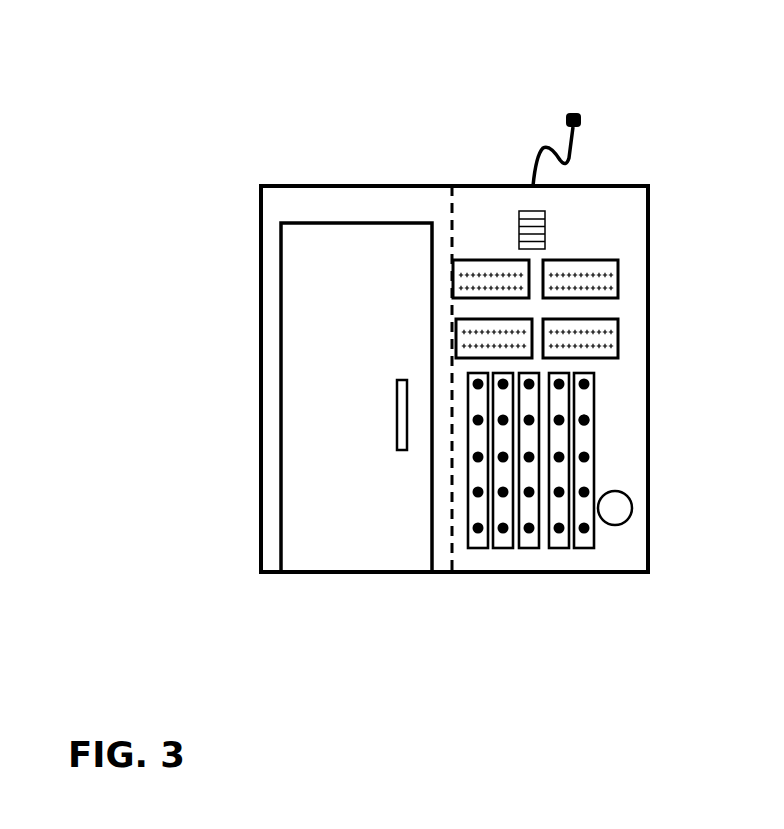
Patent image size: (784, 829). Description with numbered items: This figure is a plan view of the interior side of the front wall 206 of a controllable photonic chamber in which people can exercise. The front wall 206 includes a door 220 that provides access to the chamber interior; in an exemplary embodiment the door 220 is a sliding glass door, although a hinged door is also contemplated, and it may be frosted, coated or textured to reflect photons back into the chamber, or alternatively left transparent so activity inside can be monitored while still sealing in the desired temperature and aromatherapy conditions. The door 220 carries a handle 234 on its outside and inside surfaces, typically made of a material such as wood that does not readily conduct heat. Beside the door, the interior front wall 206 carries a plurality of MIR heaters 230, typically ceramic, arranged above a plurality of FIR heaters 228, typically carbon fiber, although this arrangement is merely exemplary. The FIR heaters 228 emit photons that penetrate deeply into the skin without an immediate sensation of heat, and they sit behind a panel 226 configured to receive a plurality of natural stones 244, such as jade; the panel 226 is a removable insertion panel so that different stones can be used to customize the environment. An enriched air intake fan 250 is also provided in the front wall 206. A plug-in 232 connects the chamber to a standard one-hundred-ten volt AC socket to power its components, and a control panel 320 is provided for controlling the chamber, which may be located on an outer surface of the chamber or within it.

The front wall 206 is at (496, 145).
The door 220 is at (318, 377).
The handle 234 is at (403, 442).
The plug-in 232 is at (582, 137).
The control panel 320 is at (558, 222).
The MIR heaters 230 is at (625, 322).
The panel 226 is at (607, 487).
The FIR heaters 228 is at (509, 555).
The natural stone 244 is at (586, 421).
The enriched air intake fan 250 is at (613, 508).